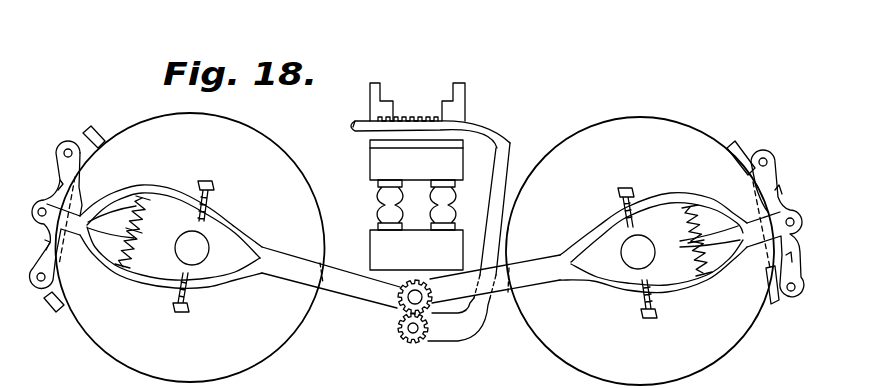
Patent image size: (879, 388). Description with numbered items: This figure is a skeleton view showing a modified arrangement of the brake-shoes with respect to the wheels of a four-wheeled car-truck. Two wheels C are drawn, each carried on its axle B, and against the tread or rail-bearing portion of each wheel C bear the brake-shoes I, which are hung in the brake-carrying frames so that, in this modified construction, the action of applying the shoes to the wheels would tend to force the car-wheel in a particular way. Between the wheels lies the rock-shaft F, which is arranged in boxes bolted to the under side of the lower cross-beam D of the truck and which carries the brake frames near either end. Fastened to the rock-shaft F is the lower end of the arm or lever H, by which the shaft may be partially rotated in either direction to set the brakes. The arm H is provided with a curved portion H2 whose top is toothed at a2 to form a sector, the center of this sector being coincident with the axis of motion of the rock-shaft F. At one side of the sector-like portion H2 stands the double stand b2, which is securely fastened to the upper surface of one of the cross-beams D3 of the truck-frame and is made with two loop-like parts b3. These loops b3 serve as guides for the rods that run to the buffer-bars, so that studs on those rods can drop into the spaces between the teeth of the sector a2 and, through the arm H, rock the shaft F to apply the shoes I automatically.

The wheels C is at (415, 249).
The axles B is at (415, 250).
The brake-shoes I is at (86, 153).
The rock-shaft F is at (400, 306).
The arm or lever H is at (496, 226).
The curved portion of arm H2 is at (430, 125).
The toothed sector a2 is at (408, 108).
The double stand b2 is at (365, 112).
The loop-like parts b3 is at (422, 89).
The cross-beam D3 is at (416, 160).
The lower cross-beam D is at (416, 250).